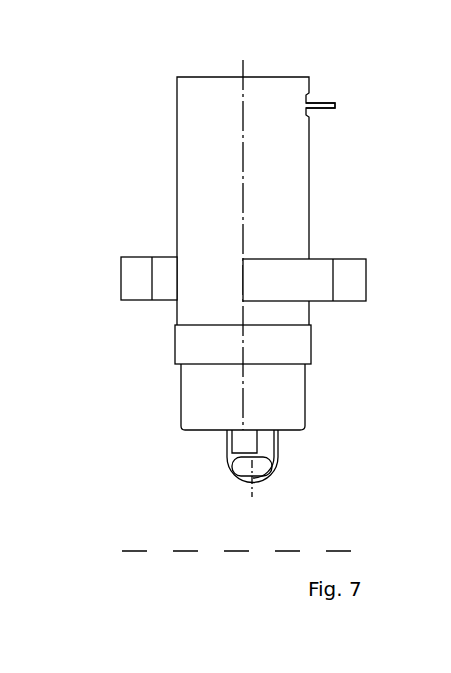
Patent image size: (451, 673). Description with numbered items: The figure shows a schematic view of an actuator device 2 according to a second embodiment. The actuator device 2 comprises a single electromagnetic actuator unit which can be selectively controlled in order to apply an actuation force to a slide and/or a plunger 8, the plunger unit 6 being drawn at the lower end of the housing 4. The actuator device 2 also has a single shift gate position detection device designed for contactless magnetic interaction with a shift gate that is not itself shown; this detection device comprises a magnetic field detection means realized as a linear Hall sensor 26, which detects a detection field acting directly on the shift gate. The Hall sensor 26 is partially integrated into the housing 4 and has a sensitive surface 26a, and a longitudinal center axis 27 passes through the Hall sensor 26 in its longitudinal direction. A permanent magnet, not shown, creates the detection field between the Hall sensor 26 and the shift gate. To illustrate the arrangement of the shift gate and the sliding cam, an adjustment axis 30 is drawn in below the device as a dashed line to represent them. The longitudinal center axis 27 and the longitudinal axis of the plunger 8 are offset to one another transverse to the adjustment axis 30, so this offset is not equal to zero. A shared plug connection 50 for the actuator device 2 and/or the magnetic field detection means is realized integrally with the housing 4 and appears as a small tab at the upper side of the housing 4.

The actuator device 2 is at (273, 215).
The housing 4 is at (314, 74).
The plunger unit 6 is at (189, 455).
The plunger 8 is at (227, 440).
The Hall sensor 26 is at (185, 509).
The sensitive surface 26a is at (258, 463).
The longitudinal center axis 27 is at (252, 494).
The adjustment axis 30 is at (137, 551).
The plug connection 50 is at (334, 105).